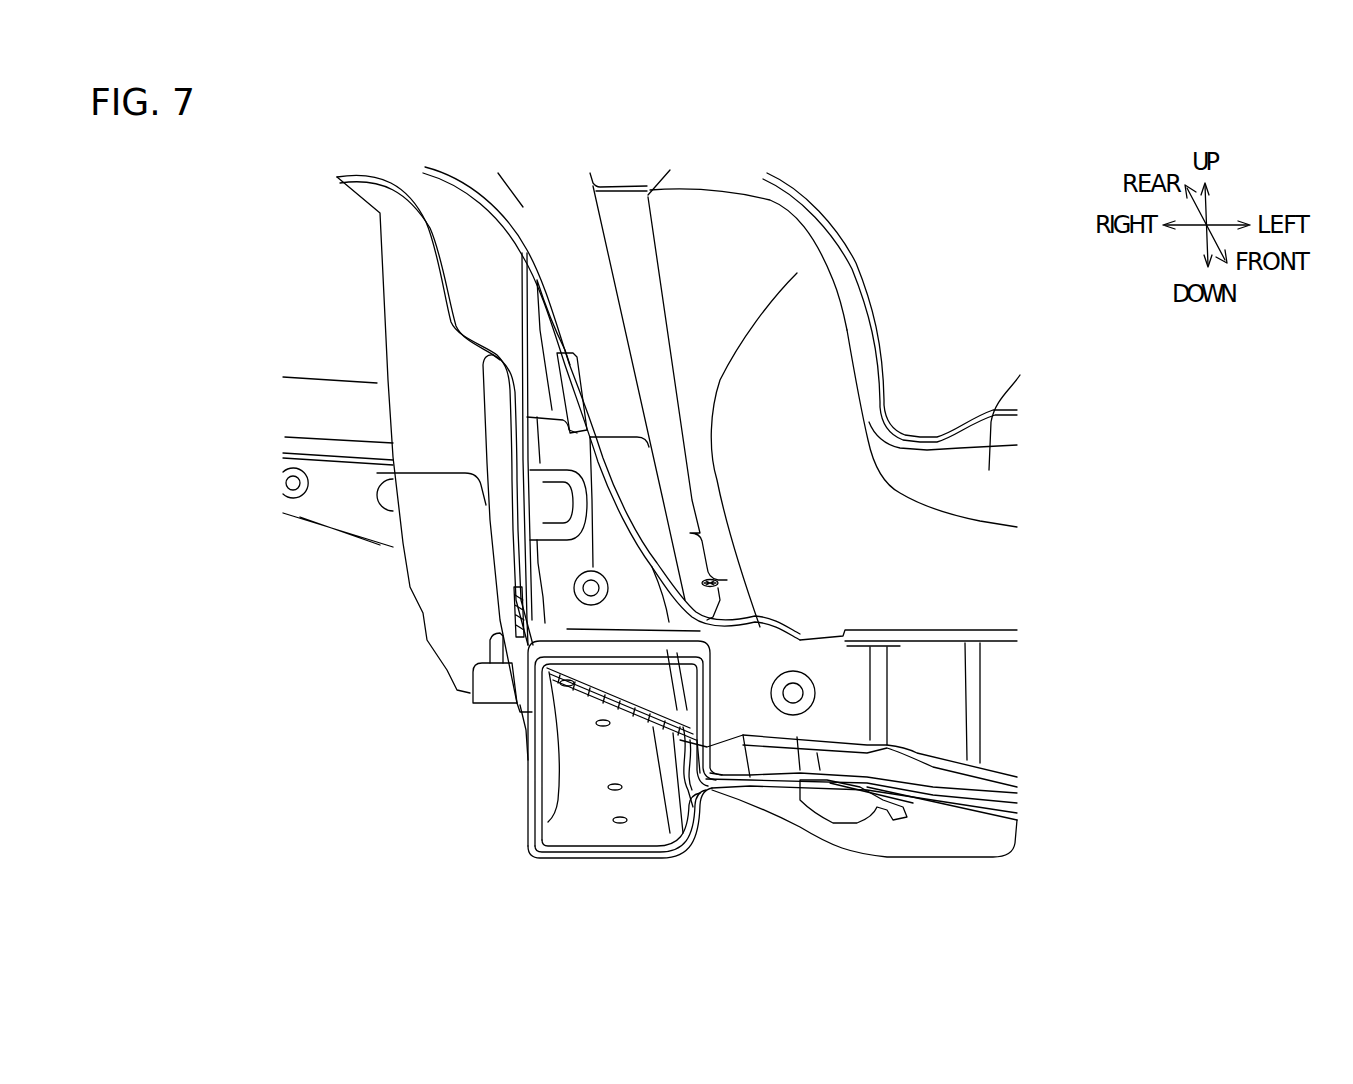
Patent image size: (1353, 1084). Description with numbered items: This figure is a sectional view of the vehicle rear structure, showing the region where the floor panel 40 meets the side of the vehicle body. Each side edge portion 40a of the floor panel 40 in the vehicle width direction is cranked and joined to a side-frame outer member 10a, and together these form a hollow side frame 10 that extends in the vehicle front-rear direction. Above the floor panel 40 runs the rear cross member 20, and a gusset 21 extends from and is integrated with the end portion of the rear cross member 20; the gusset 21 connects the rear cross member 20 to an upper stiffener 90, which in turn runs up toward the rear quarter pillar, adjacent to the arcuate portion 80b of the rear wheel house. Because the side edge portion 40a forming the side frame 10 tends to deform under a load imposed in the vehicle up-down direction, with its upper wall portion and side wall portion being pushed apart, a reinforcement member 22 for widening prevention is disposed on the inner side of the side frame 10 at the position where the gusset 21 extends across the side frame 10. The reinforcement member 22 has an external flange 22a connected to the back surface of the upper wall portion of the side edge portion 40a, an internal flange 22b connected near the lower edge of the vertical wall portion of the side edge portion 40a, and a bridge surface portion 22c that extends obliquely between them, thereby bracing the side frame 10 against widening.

The side frame 10 is at (471, 746).
The side-frame outer member 10a is at (528, 773).
The rear cross member 20 is at (997, 750).
The gusset 21 is at (698, 618).
The reinforcement member 22 is at (630, 717).
The external flange 22a is at (545, 815).
The internal flange 22b is at (712, 788).
The bridge surface portion 22c is at (627, 703).
The floor panel 40 is at (941, 428).
The side edge portion 40a is at (520, 700).
The arcuate portion 80b is at (415, 192).
The upper stiffener 90 is at (513, 203).